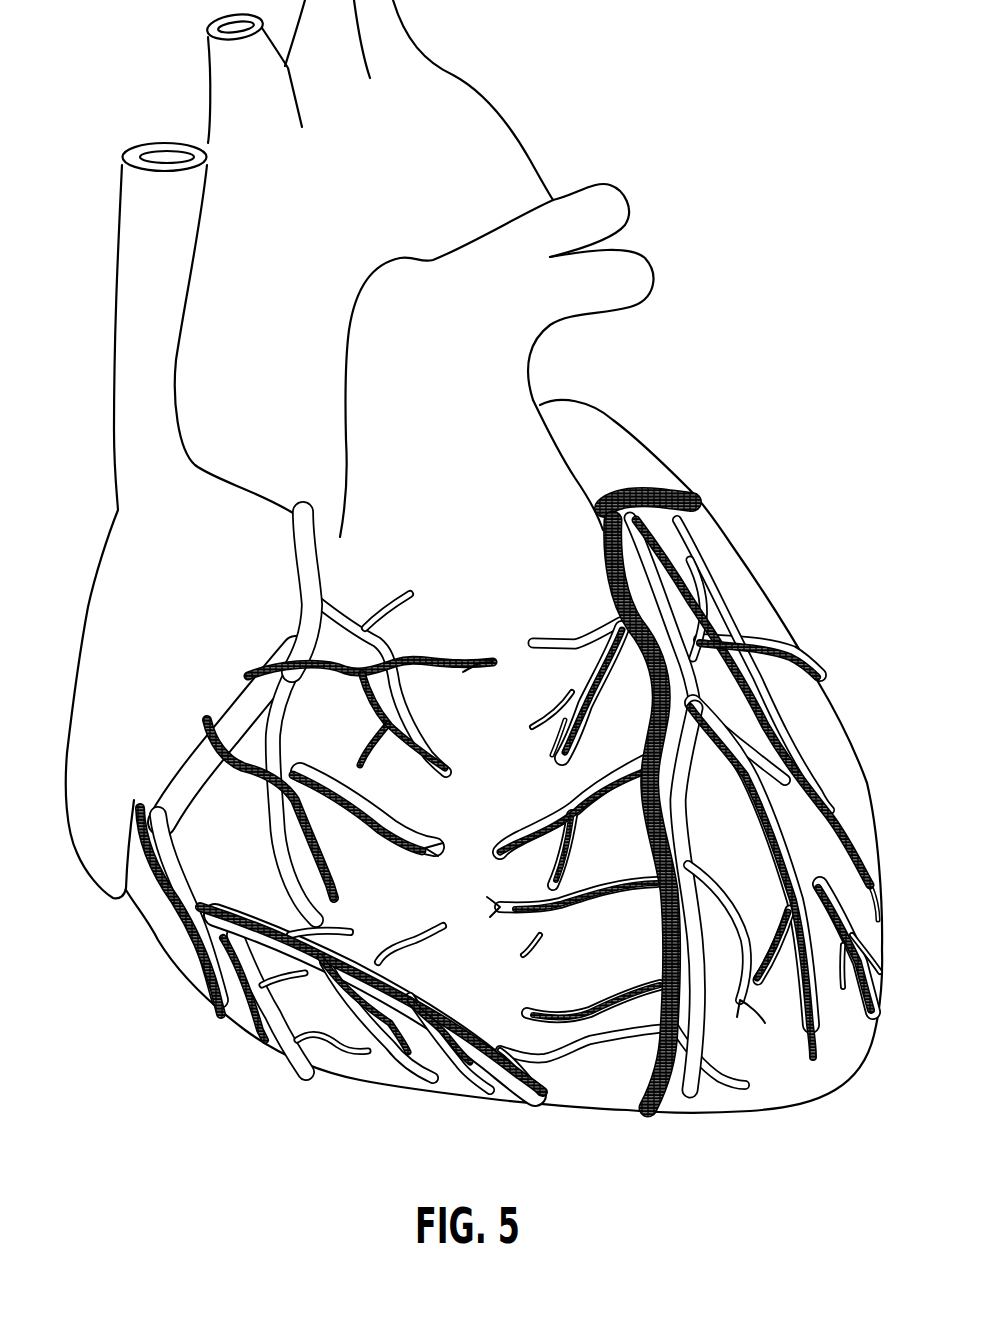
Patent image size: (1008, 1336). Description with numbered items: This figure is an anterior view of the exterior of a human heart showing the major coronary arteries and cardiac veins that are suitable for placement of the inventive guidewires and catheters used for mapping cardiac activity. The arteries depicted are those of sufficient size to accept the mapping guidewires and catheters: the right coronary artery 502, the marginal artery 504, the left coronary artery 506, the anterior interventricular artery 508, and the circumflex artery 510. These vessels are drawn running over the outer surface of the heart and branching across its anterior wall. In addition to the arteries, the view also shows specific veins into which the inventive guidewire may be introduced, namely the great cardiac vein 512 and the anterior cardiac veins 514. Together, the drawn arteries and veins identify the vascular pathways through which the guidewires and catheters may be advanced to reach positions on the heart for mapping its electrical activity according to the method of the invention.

The right coronary artery 502 is at (307, 573).
The marginal artery 504 is at (203, 907).
The left coronary artery 506 is at (590, 498).
The anterior interventricular artery 508 is at (667, 758).
The circumflex artery 510 is at (714, 518).
The great cardiac vein 512 is at (660, 641).
The anterior cardiac veins 514 is at (243, 680).